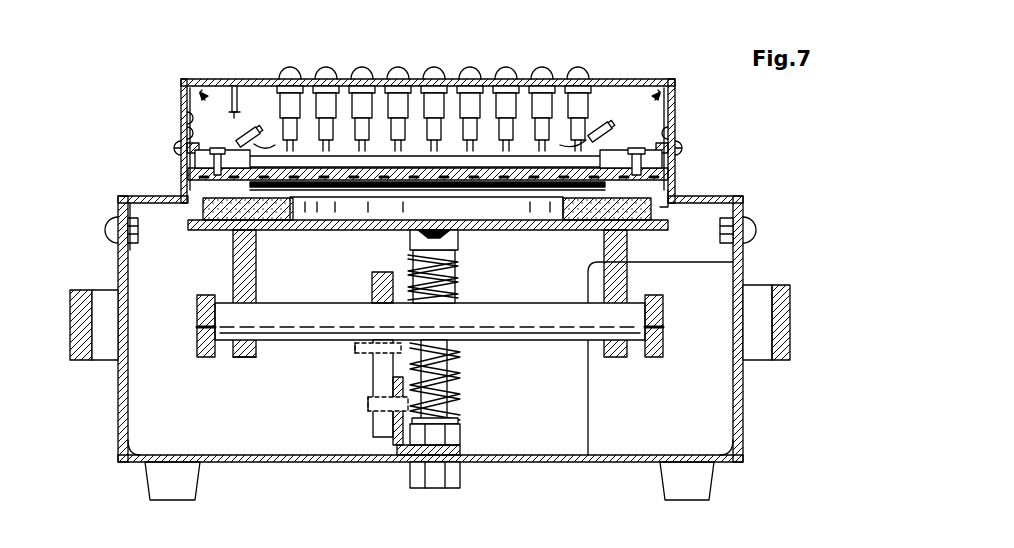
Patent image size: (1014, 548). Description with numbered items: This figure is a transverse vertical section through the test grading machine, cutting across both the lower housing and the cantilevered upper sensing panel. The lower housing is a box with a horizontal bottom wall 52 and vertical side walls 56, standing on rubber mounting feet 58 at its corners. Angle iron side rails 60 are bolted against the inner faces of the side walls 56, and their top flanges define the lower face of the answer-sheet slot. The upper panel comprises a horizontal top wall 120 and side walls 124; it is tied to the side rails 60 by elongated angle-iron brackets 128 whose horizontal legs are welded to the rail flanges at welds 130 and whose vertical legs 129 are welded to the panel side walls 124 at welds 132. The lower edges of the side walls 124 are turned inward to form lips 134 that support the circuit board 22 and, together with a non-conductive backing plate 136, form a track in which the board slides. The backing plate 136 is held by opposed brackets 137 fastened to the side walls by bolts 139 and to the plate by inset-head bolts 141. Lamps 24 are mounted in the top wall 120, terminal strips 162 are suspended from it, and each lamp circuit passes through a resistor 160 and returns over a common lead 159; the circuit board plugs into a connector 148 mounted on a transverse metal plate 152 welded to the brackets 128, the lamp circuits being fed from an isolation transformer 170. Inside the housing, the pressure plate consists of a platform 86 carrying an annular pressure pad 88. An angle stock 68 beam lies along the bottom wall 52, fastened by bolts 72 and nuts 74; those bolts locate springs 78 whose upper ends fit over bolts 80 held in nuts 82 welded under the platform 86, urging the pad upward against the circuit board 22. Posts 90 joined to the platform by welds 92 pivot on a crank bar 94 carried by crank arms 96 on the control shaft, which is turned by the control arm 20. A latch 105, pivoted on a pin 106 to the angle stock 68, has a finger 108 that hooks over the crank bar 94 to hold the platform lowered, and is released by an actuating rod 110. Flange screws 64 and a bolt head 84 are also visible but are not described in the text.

The control arm 20 is at (790, 340).
The circuit board 22 is at (495, 190).
The lamps 24 is at (325, 67).
The bottom wall 52 is at (535, 463).
The side walls 56 is at (120, 415).
The rubber mounting feet 58 is at (668, 485).
The angle iron side rails 60 is at (140, 196).
The flange screws 64 is at (107, 240).
The angle stock 68 is at (398, 450).
The bolts 72 is at (460, 398).
The nuts 74 is at (462, 437).
The springs 78 is at (460, 358).
The bolts 80 is at (458, 280).
The nuts 82 is at (455, 242).
The bolt head 84 is at (412, 240).
The platform 86 is at (330, 232).
The pressure pad 88 is at (530, 232).
The posts 90 is at (246, 360).
The welds 92 is at (260, 233).
The crank bar 94 is at (562, 332).
The crank arms 96 is at (206, 357).
The latch 105 is at (382, 368).
The pin 106 is at (368, 404).
The finger 108 is at (371, 290).
The actuating rod 110 is at (355, 348).
The top wall 120 is at (650, 79).
The side walls 124 is at (181, 95).
The angle-iron brackets 128 is at (163, 205).
The vertical legs 129 is at (186, 118).
The welds 130 is at (143, 212).
The welds 132 is at (205, 95).
The lips 134 is at (195, 200).
The backing plate 136 is at (385, 170).
The brackets 137 is at (186, 133).
The bolts 139 is at (176, 147).
The bolts 141 is at (217, 180).
The printed circuit board connector 148 is at (346, 155).
The metal plate 152 is at (650, 155).
The common return lead 159 is at (496, 150).
The resistor 160 is at (253, 138).
The terminal strips 162 is at (238, 100).
The isolation transformer 170 is at (712, 425).